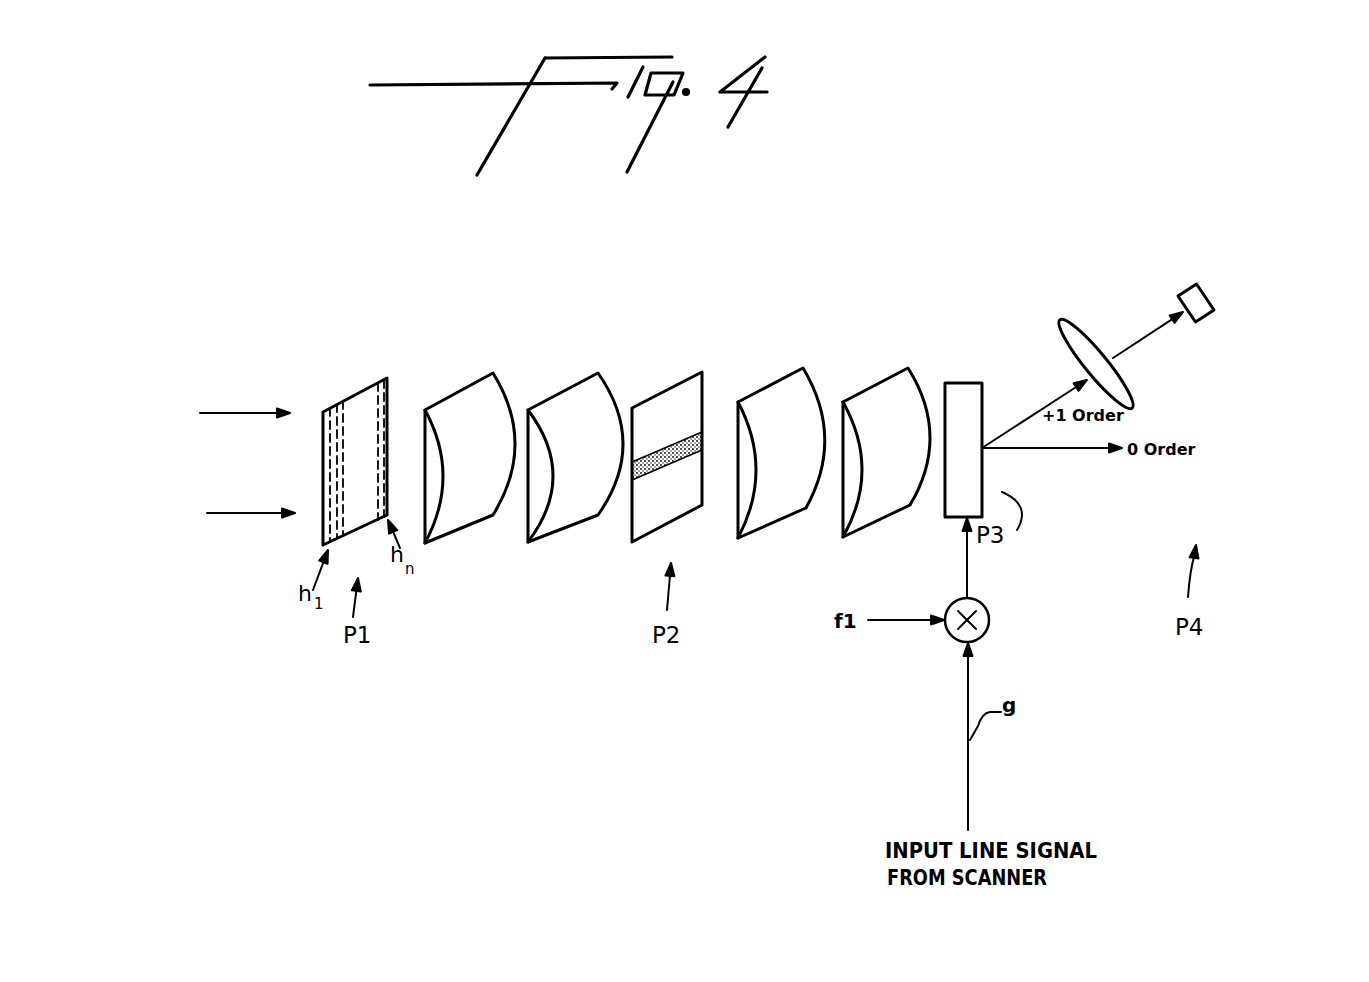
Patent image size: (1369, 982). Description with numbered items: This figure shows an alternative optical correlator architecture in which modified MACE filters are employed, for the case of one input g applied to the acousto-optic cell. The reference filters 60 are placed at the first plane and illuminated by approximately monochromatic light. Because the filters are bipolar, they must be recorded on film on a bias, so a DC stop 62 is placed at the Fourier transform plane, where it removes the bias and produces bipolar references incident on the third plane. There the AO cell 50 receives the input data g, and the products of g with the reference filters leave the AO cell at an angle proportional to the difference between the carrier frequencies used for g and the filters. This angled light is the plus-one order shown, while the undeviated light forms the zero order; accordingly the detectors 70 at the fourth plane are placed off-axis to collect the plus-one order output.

The AO cell 50 is at (972, 402).
The reference filters 60 is at (360, 392).
The DC stop 62 is at (633, 480).
The detectors 70 is at (1213, 296).